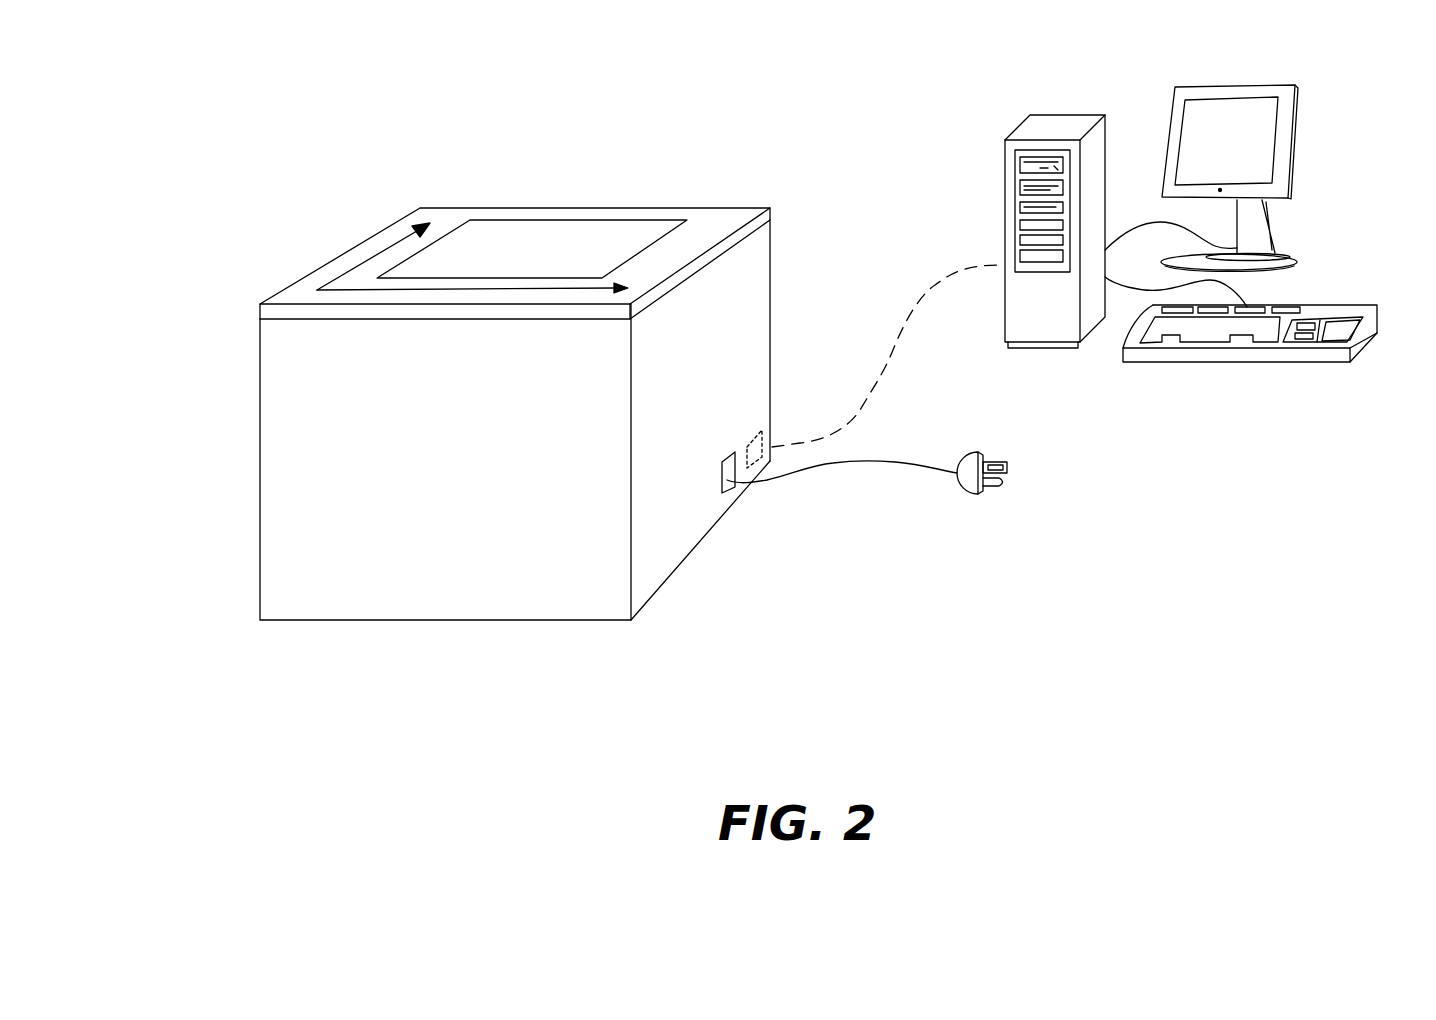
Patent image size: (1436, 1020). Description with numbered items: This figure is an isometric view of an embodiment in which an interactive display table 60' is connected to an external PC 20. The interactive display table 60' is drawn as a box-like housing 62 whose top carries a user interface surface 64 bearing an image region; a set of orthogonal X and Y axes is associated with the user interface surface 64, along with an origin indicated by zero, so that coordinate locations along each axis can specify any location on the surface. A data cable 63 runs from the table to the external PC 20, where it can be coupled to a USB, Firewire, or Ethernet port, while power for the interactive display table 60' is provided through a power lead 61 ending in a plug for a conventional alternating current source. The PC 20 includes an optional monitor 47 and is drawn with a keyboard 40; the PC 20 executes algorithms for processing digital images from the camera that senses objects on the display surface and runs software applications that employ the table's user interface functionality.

The interactive display table 60' is at (467, 356).
The scanner housing 62 is at (259, 416).
The user interface surface 64 is at (398, 235).
The data cable 63 is at (897, 348).
The power lead 61 is at (882, 462).
The PC 20 is at (1065, 115).
The monitor 47 is at (1293, 137).
The keyboard 40 is at (1330, 305).